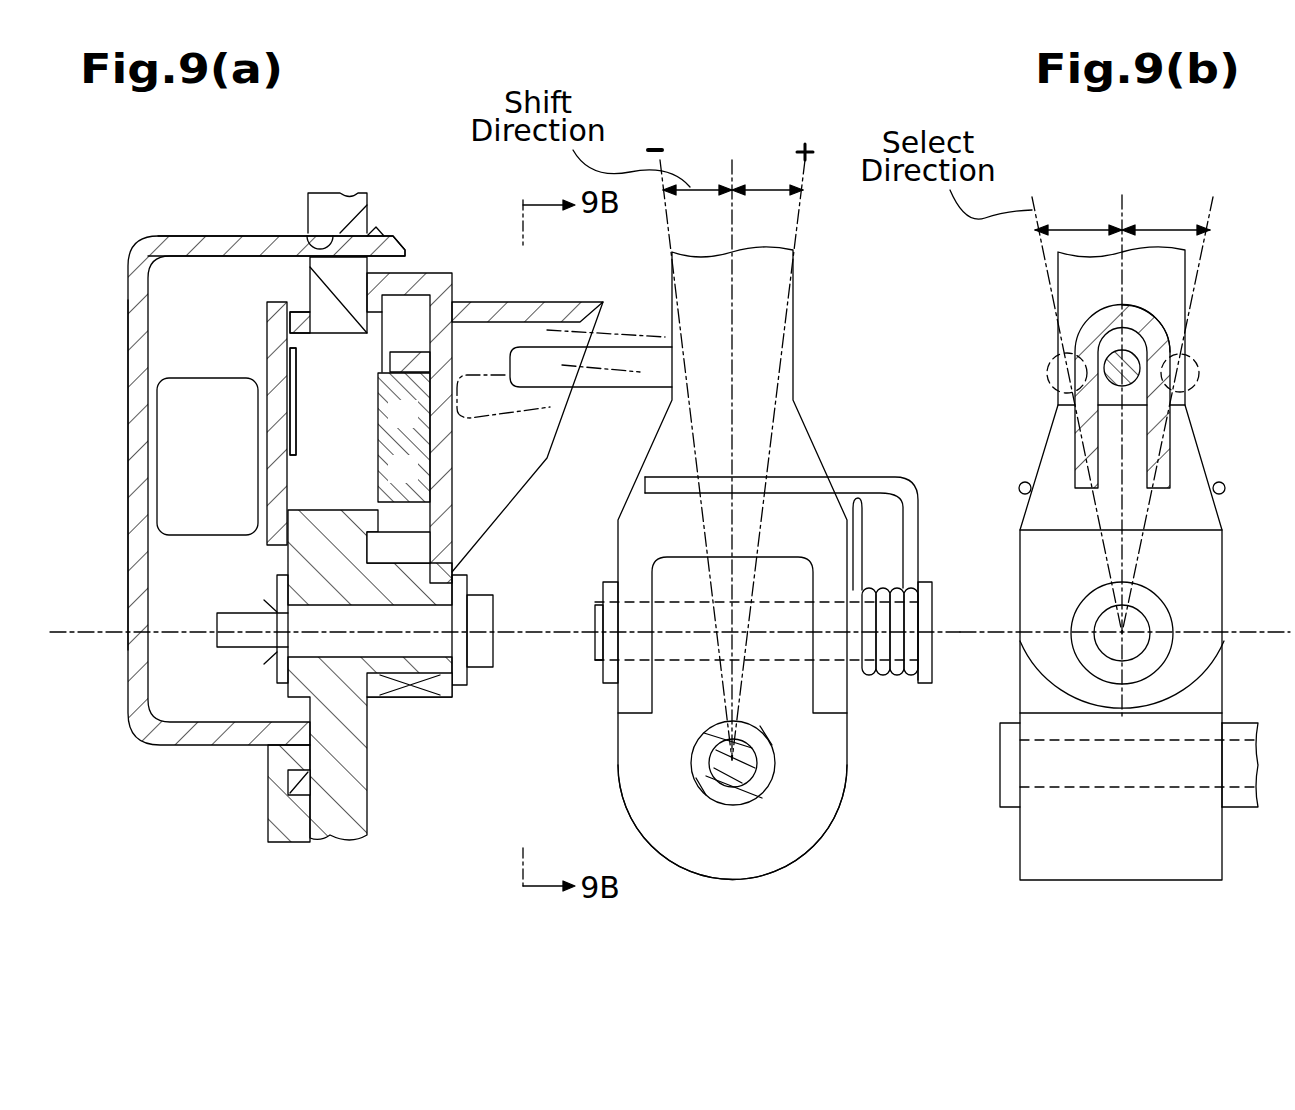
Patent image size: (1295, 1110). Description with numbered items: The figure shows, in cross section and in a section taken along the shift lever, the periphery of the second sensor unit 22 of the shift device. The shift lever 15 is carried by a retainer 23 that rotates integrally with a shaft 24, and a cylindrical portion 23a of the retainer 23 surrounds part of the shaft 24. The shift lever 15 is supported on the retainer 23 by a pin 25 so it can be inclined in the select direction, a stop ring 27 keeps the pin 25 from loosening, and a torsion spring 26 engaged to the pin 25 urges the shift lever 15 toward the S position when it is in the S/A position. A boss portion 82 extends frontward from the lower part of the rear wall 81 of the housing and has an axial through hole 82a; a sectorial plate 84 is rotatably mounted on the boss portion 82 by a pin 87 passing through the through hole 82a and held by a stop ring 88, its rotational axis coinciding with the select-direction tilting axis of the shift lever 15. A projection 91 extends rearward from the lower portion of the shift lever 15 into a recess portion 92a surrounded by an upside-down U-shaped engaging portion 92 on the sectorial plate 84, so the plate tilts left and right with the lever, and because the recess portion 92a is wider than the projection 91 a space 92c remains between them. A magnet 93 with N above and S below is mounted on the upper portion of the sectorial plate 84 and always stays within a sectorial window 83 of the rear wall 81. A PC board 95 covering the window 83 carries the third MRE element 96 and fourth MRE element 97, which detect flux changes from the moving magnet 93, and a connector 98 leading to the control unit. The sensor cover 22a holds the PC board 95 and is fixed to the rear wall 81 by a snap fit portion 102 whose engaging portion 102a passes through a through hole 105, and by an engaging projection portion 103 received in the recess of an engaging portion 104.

In FIG. 9A, the shift lever 15 is at (666, 303).
In FIG. 9B, the shift lever 15 is at (1046, 448).
In FIG. 9A, the second sensor unit 22 is at (211, 197).
In FIG. 9A, the sensor cover 22a is at (172, 236).
In FIG. 9A, the retainer 23 is at (615, 780).
In FIG. 9B, the retainer 23 is at (1020, 705).
In FIG. 9A, the cylindrical portion 23a is at (690, 770).
In FIG. 9B, the cylindrical portion 23a is at (1240, 808).
In FIG. 9A, the shaft 24 is at (722, 790).
In FIG. 9B, the shaft 24 is at (1000, 776).
In FIG. 9A, the pin 25 is at (595, 612).
In FIG. 9B, the pin 25 is at (1097, 613).
In FIG. 9A, the torsion spring 26 is at (884, 477).
In FIG. 9B, the torsion spring 26 is at (1019, 487).
In FIG. 9A, the stop ring 27 is at (610, 580).
In FIG. 9B, the stop ring 27 is at (1160, 598).
In FIG. 9A, the rear wall 81 is at (324, 198).
In FIG. 9A, the boss portion 82 is at (408, 667).
In FIG. 9A, the through hole 82a is at (430, 655).
In FIG. 9A, the window 83 is at (303, 333).
In FIG. 9A, the sectorial plate 84 is at (462, 283).
In FIG. 9A, the pin 87 is at (218, 627).
In FIG. 9A, the stop ring 88 is at (270, 598).
In FIG. 9A, the projection 91 is at (591, 390).
In FIG. 9B, the projection 91 is at (1103, 333).
In FIG. 9A, the engaging portion 92 is at (542, 300).
In FIG. 9B, the engaging portion 92 is at (1152, 316).
In FIG. 9A, the recess portion 92a is at (575, 363).
In FIG. 9B, the recess portion 92a is at (1167, 340).
In FIG. 9B, the space 92c is at (1097, 358).
In FIG. 9A, the magnet 93 is at (378, 388).
In FIG. 9A, the PC board 95 is at (267, 358).
In FIG. 9A, the third MRE element 96 is at (293, 412).
In FIG. 9A, the fourth MRE element 97 is at (322, 427).
In FIG. 9A, the connector 98 is at (192, 378).
In FIG. 9A, the snap fit portion 102 is at (417, 245).
In FIG. 9A, the engaging portion 102a is at (382, 232).
In FIG. 9A, the engaging projection portion 103 is at (298, 760).
In FIG. 9A, the engaging portion 104 is at (266, 800).
In FIG. 9A, the through hole 105 is at (312, 238).